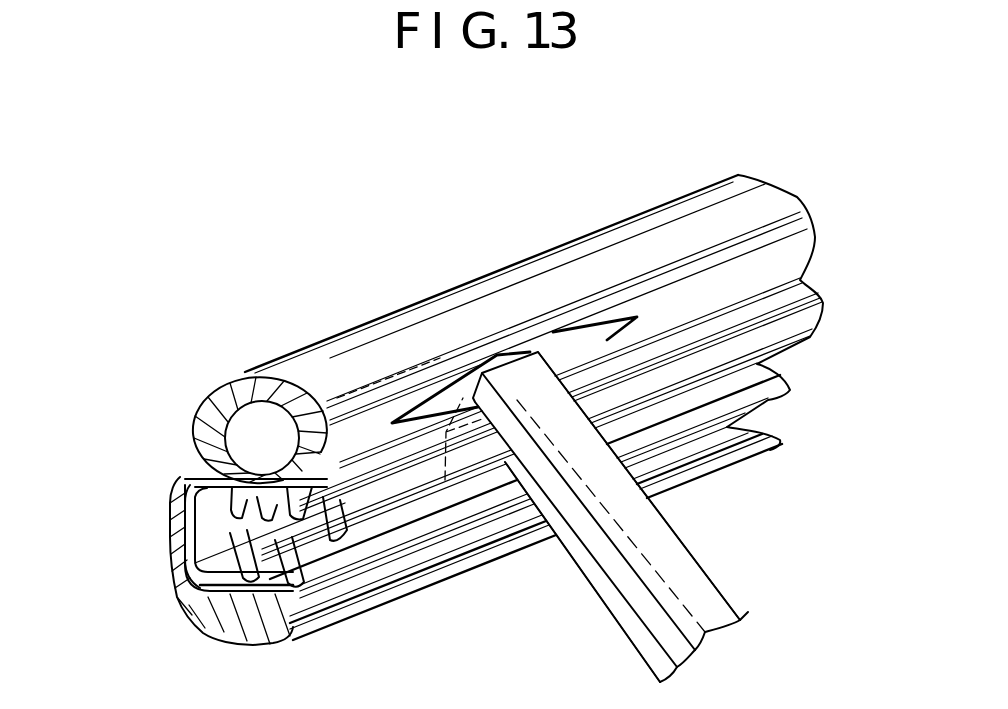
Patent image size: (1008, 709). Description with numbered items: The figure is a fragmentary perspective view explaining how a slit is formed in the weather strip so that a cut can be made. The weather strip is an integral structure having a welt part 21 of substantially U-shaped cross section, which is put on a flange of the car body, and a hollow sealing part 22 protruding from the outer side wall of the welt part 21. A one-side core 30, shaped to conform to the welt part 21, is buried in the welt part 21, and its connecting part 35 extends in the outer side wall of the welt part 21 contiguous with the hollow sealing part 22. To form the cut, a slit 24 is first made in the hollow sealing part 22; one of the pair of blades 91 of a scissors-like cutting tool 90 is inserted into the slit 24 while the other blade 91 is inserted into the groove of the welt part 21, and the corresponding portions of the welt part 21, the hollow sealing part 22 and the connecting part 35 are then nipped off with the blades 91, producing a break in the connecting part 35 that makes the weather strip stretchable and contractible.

The welt part 21 is at (170, 533).
The hollow sealing part 22 is at (590, 270).
The slit 24 is at (451, 397).
The one-side core 30 is at (187, 478).
The connecting part 35 is at (262, 478).
The scissors-like cutting tool 90 is at (720, 653).
The blades 91 is at (585, 595).